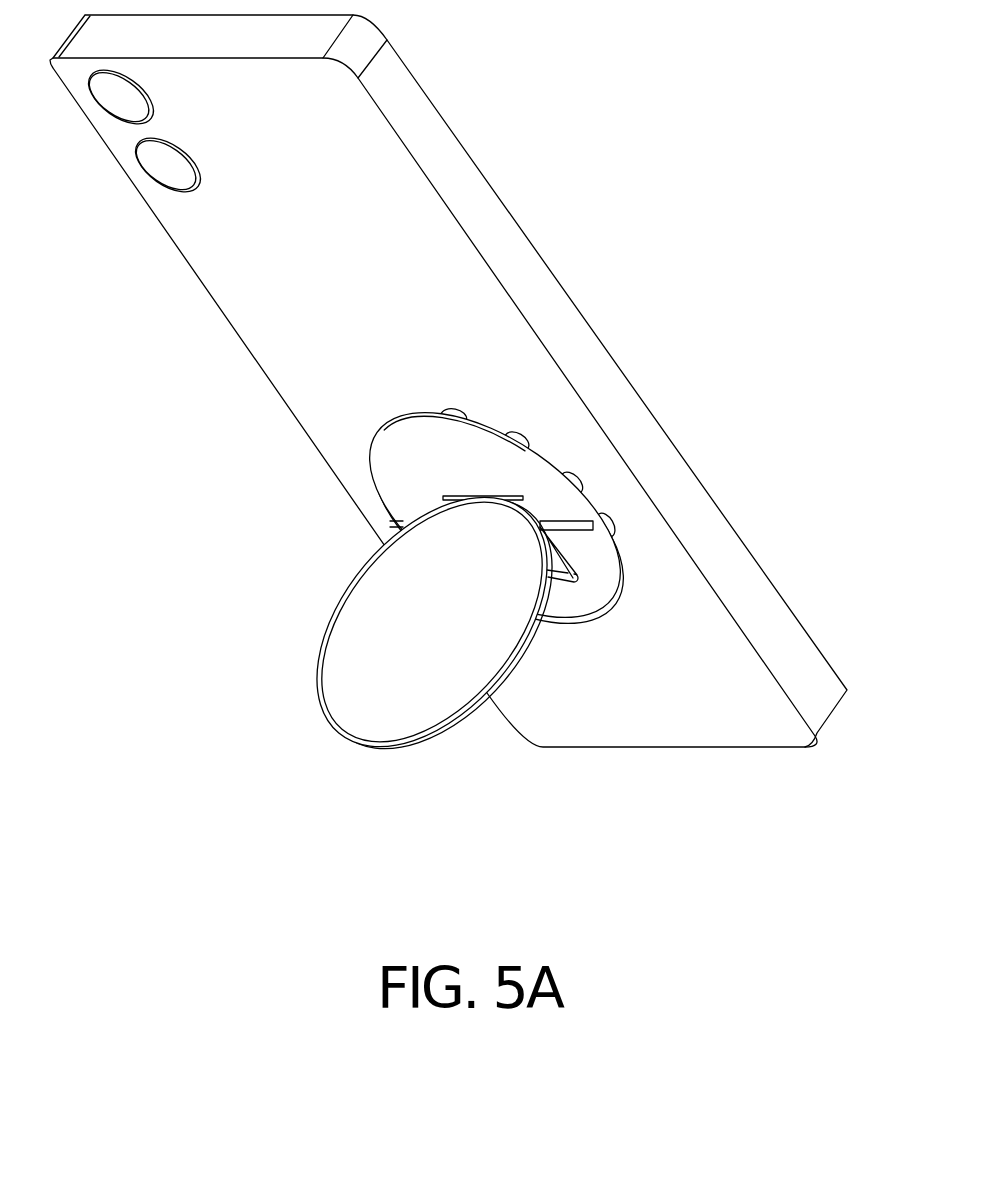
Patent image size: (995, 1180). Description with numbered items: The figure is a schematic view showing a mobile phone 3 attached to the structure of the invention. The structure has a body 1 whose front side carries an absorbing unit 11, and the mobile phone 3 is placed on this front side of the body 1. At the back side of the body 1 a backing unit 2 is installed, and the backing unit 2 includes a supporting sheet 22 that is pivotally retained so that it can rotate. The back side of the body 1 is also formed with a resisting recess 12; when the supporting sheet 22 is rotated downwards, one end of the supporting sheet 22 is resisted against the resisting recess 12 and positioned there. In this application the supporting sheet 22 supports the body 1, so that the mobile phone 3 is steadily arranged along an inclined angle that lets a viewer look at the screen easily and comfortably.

The body 1 is at (458, 470).
The absorbing unit 11 is at (534, 443).
The resisting recess 12 is at (395, 509).
The backing unit 2 is at (414, 647).
The supporting sheet 22 is at (327, 715).
The mobile phone 3 is at (534, 208).